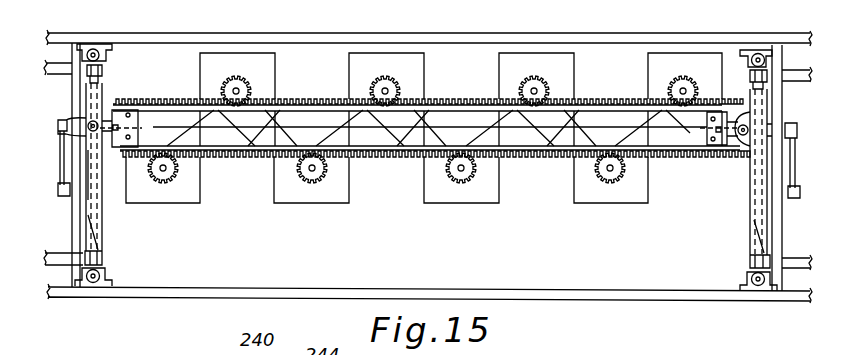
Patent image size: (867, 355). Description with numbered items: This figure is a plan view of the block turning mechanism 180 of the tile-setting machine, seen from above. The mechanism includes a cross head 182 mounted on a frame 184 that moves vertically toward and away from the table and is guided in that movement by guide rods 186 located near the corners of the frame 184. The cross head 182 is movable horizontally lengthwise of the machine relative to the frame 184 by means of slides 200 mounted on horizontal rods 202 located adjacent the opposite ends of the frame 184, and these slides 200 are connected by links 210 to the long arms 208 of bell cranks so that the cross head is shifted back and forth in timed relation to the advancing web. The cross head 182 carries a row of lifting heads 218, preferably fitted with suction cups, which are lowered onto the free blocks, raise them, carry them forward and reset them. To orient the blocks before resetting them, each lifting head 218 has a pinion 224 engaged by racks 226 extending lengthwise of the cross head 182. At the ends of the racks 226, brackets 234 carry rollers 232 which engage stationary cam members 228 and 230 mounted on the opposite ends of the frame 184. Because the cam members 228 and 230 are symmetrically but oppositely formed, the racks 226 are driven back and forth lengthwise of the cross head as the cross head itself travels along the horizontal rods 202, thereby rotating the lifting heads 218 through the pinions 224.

The drive assembly 180 is at (636, 190).
The cross head 182 is at (345, 127).
The frame 184 is at (295, 287).
The guide rods 186 is at (96, 50).
The slides 200 is at (104, 93).
The horizontal rods 202 is at (101, 232).
The long arms 208 is at (798, 184).
The links 210 is at (785, 127).
The lifting heads 218 is at (575, 195).
The pinions 224 is at (447, 168).
The racks 226 is at (459, 99).
The stationary cam member 228 is at (101, 195).
The stationary cam member 230 is at (760, 178).
The rollers 232 is at (112, 109).
The brackets 234 is at (117, 152).